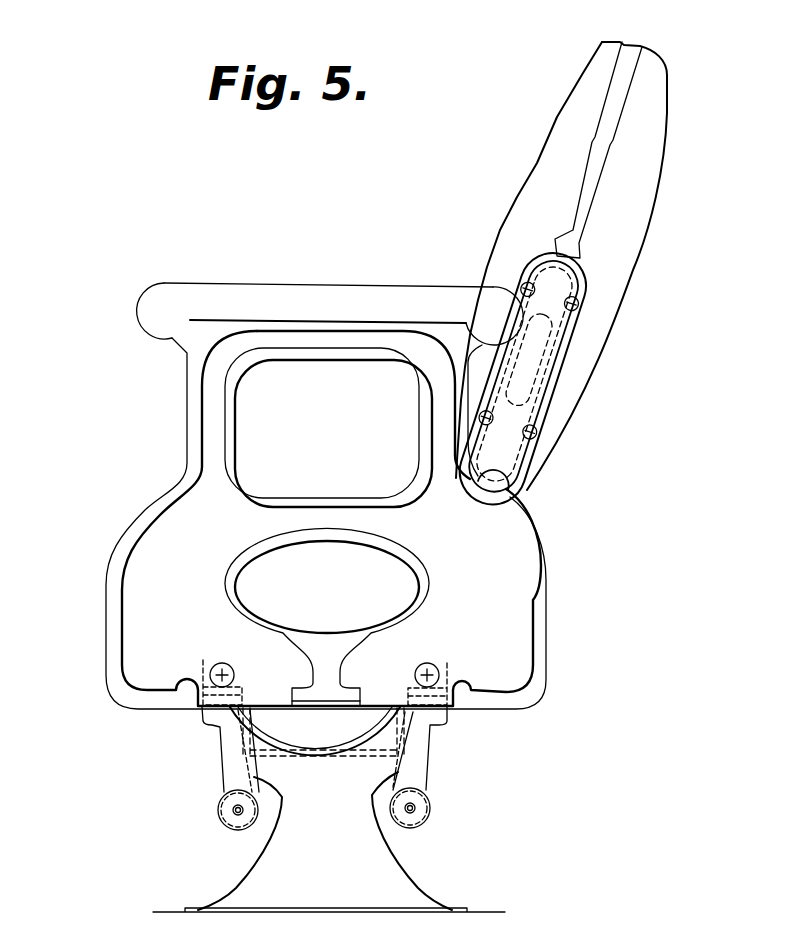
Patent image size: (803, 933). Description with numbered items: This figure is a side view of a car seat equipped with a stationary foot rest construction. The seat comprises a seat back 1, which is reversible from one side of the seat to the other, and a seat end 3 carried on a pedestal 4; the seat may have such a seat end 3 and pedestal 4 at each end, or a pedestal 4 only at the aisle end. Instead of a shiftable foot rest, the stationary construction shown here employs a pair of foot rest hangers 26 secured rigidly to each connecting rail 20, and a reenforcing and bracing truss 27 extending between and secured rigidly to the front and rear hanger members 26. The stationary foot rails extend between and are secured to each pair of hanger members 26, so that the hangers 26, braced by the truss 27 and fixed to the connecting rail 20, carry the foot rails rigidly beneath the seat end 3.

The seat back 1 is at (548, 156).
The seat end 3 is at (520, 587).
The connecting rail 20 is at (203, 660).
The foot rest hanger 26 is at (232, 755).
The reenforcing and bracing truss 27 is at (323, 748).
The pedestal 4 is at (392, 887).